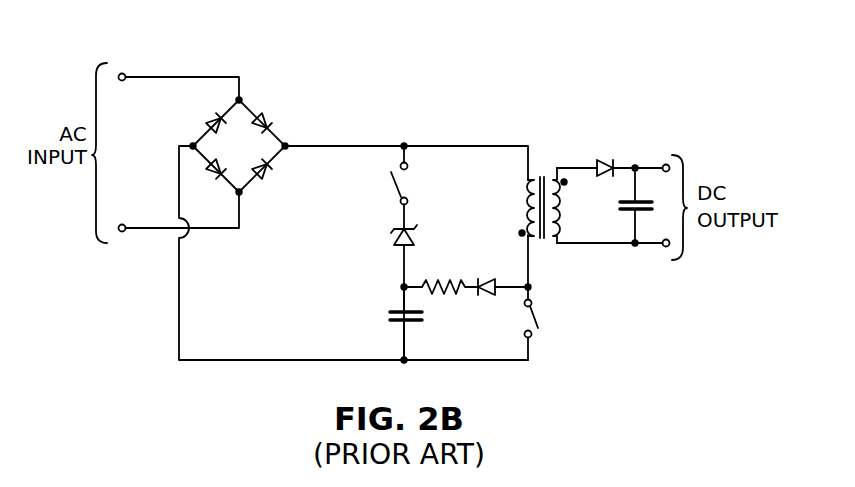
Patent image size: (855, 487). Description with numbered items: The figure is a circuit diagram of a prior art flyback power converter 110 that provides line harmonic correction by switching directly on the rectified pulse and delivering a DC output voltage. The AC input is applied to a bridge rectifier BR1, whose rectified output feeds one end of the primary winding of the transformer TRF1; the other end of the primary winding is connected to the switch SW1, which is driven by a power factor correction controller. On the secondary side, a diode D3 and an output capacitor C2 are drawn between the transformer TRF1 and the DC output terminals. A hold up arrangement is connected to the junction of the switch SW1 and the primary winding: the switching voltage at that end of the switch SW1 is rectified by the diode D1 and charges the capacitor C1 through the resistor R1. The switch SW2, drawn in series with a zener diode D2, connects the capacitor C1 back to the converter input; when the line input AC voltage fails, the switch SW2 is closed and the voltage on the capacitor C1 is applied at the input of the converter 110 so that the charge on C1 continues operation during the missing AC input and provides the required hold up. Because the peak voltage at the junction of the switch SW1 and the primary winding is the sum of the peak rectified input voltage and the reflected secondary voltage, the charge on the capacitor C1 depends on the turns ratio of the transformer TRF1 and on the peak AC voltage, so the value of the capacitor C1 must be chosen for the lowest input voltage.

The power converter 110 is at (132, 38).
The bridge rectifier BR1 is at (244, 104).
The switch SW2 is at (409, 186).
The zener diode D2 is at (416, 238).
The capacitor C1 is at (397, 324).
The resistor R1 is at (440, 281).
The diode D1 is at (492, 281).
The switch SW1 is at (545, 322).
The transformer TRF1 is at (536, 176).
The diode D3 is at (603, 160).
The capacitor C2 is at (628, 211).